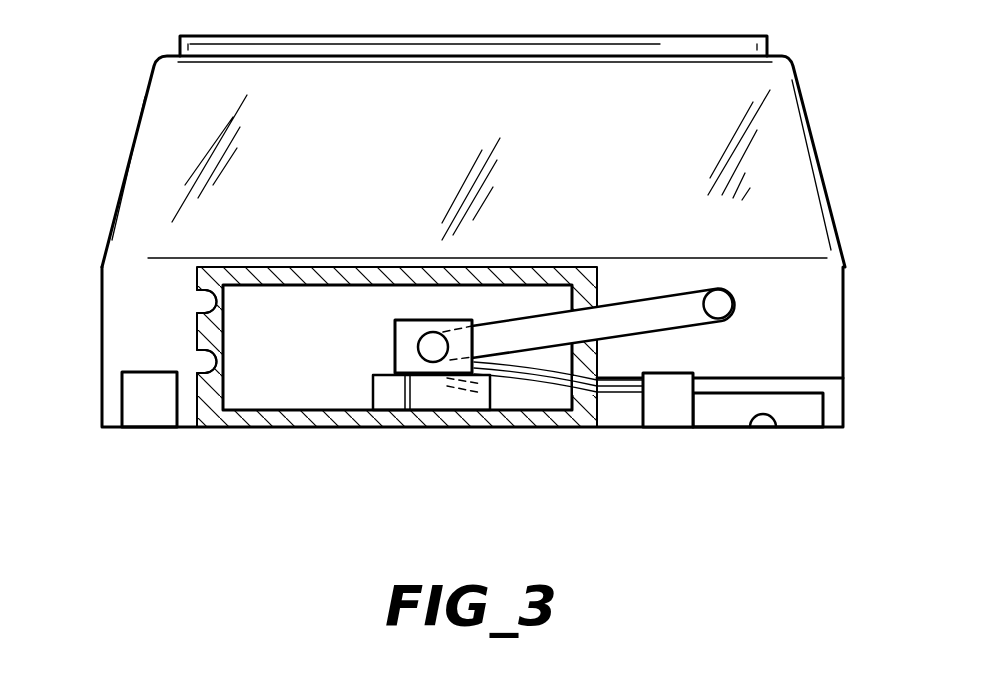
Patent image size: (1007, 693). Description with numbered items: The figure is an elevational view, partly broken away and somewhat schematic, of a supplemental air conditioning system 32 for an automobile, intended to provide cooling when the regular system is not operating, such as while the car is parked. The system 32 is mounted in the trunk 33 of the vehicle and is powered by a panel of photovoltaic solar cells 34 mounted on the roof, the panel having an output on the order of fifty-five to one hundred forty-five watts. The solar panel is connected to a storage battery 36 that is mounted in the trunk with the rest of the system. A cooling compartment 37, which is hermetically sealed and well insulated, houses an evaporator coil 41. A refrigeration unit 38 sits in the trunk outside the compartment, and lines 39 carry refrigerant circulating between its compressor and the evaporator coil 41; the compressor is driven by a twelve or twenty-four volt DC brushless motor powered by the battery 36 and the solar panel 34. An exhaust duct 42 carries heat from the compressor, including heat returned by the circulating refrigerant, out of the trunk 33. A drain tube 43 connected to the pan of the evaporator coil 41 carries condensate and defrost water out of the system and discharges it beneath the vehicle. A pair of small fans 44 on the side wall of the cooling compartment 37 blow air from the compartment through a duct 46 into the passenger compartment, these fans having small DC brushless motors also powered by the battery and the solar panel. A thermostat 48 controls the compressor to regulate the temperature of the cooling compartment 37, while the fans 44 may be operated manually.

The air conditioning system 32 is at (541, 437).
The trunk 33 is at (102, 333).
The panel of photovoltaic solar cells 34 is at (500, 50).
The storage battery 36 is at (148, 403).
The cooling compartment 37 is at (312, 300).
The refrigeration unit 38 is at (680, 403).
The lines 39 is at (614, 393).
The evaporator coil 41 is at (395, 335).
The exhaust duct 42 is at (770, 383).
The drain tube 43 is at (416, 412).
The fans 44 is at (223, 337).
The duct 46 is at (634, 315).
The thermostat 48 is at (767, 423).